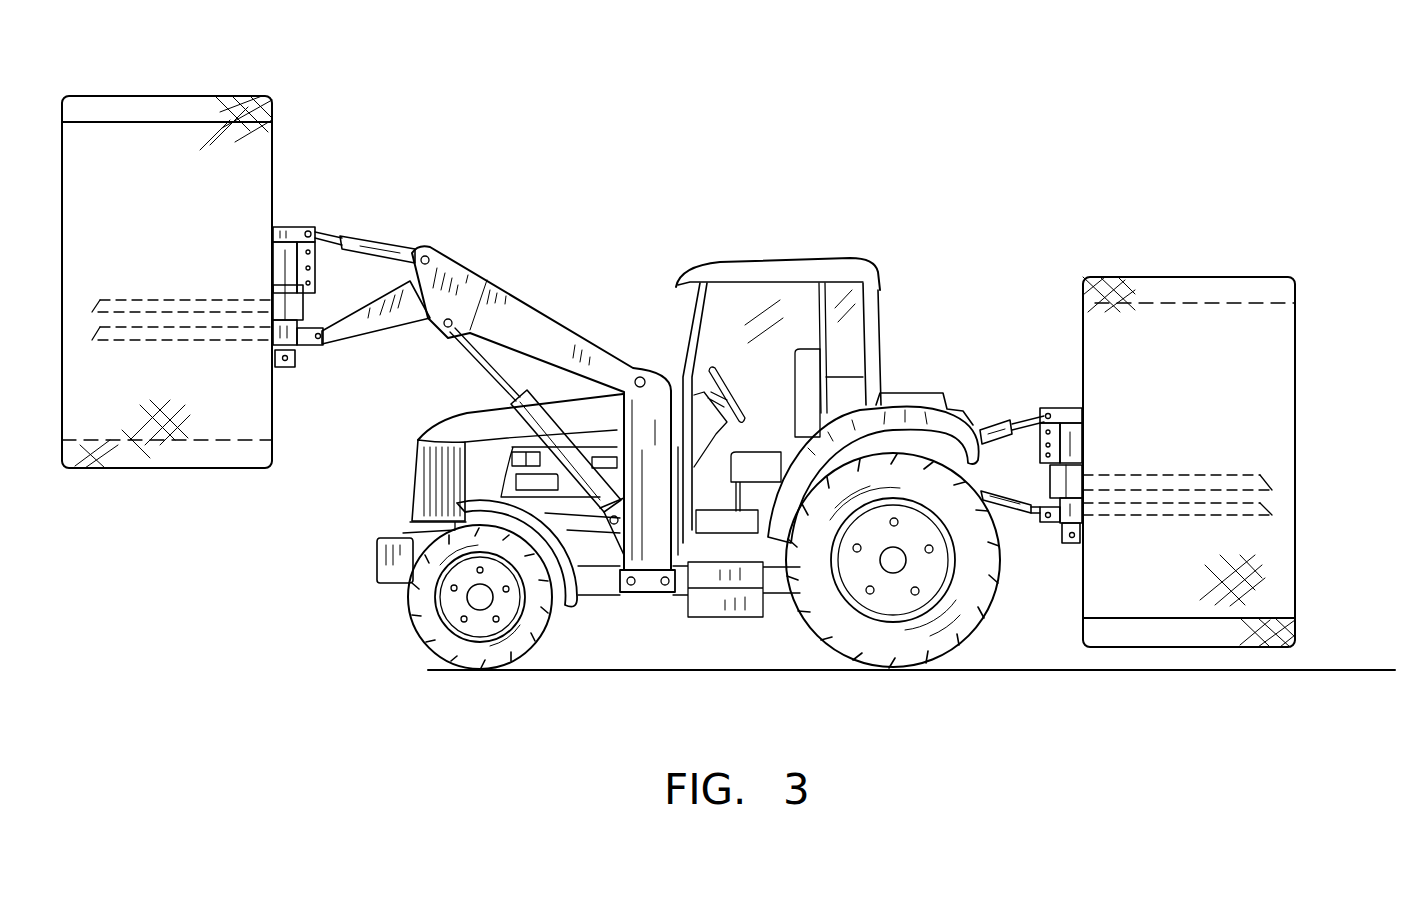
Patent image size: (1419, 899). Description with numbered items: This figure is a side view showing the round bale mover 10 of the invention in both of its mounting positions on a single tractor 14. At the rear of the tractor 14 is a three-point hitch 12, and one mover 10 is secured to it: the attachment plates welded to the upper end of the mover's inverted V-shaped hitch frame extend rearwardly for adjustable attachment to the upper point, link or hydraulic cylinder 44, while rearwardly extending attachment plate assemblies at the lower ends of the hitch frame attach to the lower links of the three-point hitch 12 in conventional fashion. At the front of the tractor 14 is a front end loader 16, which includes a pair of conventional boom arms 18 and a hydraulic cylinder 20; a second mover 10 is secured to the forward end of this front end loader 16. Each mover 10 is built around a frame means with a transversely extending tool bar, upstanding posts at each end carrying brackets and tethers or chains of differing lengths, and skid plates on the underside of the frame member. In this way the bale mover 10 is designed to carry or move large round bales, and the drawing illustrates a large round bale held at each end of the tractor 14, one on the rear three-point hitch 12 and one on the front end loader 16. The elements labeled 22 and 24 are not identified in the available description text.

The round bale mover 10 is at (290, 227).
The three-point hitch 12 is at (988, 423).
The tractor 14 is at (822, 262).
The front end loader 16 is at (538, 287).
The boom arms 18 is at (487, 336).
The hydraulic cylinder 20 is at (367, 247).
The bale 22 is at (184, 97).
The bale wrap 24 is at (1287, 636).
The upper link or hydraulic cylinder 44 is at (1012, 430).